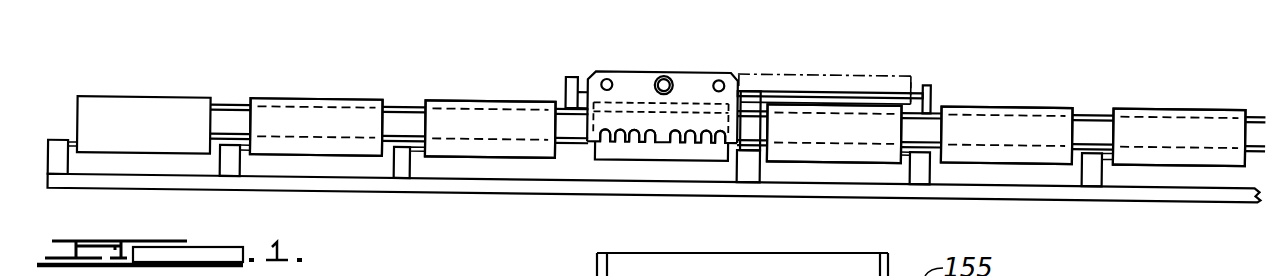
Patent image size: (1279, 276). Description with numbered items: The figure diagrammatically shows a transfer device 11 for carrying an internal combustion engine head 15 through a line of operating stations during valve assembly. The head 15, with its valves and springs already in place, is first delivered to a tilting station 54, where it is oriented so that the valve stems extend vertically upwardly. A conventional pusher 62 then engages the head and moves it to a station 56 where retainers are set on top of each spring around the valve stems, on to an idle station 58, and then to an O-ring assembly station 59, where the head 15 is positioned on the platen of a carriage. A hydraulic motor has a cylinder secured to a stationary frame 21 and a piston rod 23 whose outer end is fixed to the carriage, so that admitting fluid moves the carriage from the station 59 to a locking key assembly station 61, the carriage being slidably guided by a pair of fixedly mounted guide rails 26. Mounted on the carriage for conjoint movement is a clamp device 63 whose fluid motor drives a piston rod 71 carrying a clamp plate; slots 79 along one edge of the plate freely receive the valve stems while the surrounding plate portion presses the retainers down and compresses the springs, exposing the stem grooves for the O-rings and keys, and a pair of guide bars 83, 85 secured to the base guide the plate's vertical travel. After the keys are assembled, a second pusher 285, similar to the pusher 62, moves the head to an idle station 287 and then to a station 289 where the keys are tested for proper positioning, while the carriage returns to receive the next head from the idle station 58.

The transfer device 11 is at (1013, 206).
The internal combustion engine head 15 is at (350, 99).
The stationary frame 21 is at (930, 87).
The piston rod 23 is at (918, 86).
The guide rails 26 is at (402, 138).
The tilting station 54 is at (170, 95).
The retainer station 56 is at (337, 162).
The idle station 58 is at (480, 168).
The O-ring assembly station 59 is at (625, 161).
The locking key assembly station 61 is at (833, 162).
The pusher 62 is at (230, 167).
The clamp device 63 is at (840, 67).
The piston rod 71 is at (670, 73).
The slots 79 is at (706, 139).
The guide bar 83 is at (720, 76).
The guide bar 85 is at (609, 77).
The pusher 285 is at (748, 170).
The idle station 287 is at (1017, 86).
The testing station 289 is at (1170, 81).